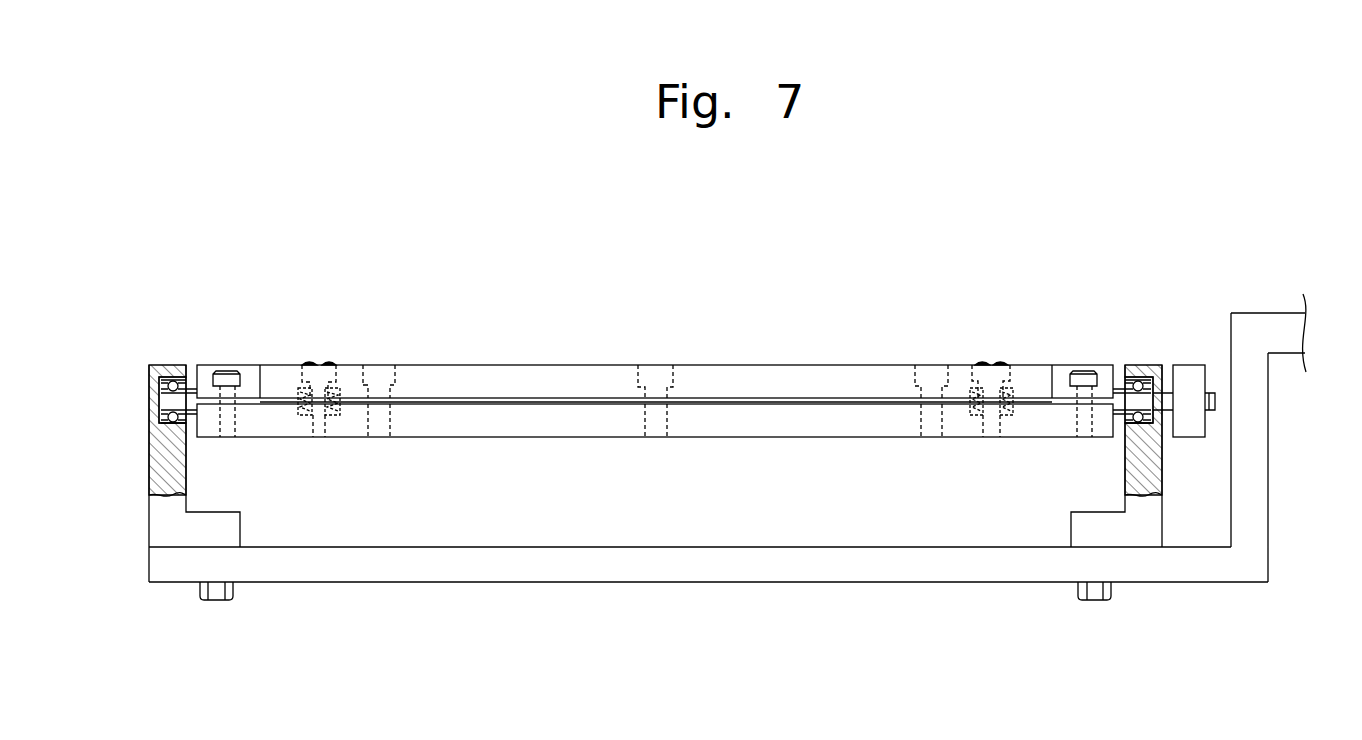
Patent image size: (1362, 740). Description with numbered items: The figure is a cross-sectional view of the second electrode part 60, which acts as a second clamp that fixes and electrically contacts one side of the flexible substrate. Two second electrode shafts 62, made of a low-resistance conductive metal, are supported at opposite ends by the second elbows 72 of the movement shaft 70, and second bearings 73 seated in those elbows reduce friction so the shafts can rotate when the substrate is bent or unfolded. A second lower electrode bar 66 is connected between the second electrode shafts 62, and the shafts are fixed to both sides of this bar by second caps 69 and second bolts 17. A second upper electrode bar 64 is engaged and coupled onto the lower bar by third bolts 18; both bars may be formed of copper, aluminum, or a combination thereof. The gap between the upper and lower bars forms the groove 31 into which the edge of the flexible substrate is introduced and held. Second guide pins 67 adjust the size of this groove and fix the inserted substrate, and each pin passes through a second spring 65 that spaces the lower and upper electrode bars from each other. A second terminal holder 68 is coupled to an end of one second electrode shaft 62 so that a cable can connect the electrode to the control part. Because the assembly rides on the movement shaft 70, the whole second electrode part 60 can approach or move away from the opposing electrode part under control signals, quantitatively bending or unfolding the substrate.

The second bolts 17 is at (226, 371).
The third bolts 18 is at (384, 370).
The first groove 31 is at (757, 398).
The second electrode part 60 is at (864, 358).
The second electrode shafts 62 is at (165, 400).
The second upper electrode bar 64 is at (508, 368).
The second spring 65 is at (300, 389).
The second lower electrode bar 66 is at (562, 430).
The second guide pins 67 is at (328, 364).
The second terminal holder 68 is at (1188, 368).
The second caps 69 is at (248, 370).
The movement shaft 70 is at (890, 576).
The second elbows 72 is at (162, 526).
The second bearings 73 is at (156, 412).